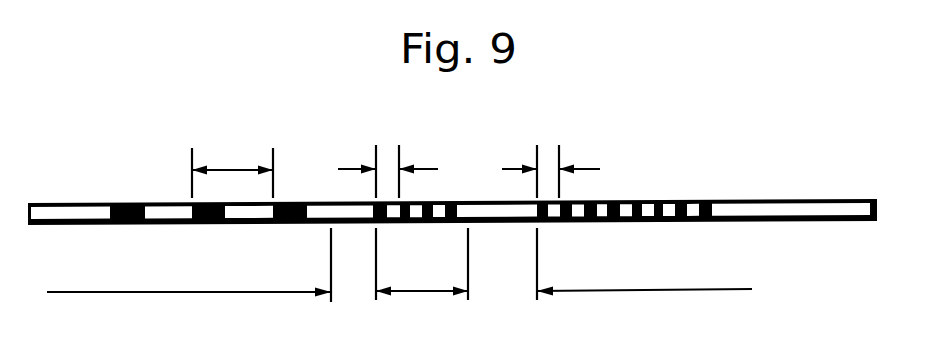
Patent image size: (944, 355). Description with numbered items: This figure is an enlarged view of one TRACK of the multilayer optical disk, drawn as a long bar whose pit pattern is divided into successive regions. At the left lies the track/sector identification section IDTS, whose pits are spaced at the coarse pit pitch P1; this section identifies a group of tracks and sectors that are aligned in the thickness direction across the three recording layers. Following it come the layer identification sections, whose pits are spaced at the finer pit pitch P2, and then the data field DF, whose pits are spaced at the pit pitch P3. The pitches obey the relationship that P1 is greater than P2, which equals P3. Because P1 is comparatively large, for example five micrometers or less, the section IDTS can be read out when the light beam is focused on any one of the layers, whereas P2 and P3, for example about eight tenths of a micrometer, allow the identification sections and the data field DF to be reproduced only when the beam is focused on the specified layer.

The track TRACK is at (808, 200).
The pit pitch of track/sector identification section P1 is at (232, 160).
The pit pitch of identification sections P2 is at (388, 160).
The pit pitch of data field P3 is at (551, 160).
The track/sector identification section IDTS is at (189, 265).
The data field DF is at (644, 264).